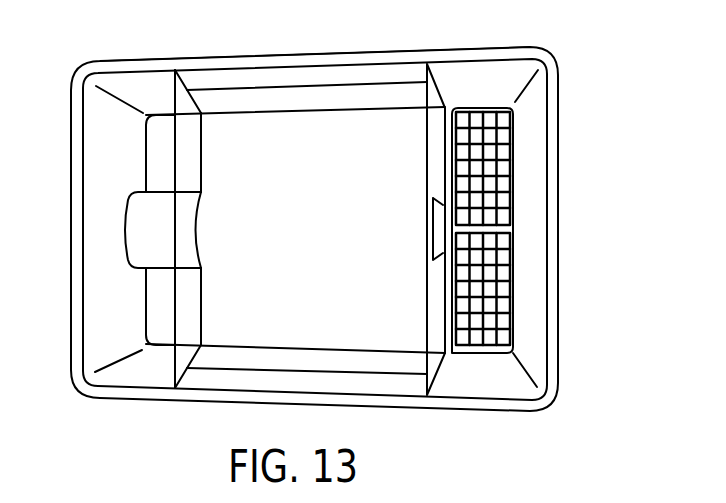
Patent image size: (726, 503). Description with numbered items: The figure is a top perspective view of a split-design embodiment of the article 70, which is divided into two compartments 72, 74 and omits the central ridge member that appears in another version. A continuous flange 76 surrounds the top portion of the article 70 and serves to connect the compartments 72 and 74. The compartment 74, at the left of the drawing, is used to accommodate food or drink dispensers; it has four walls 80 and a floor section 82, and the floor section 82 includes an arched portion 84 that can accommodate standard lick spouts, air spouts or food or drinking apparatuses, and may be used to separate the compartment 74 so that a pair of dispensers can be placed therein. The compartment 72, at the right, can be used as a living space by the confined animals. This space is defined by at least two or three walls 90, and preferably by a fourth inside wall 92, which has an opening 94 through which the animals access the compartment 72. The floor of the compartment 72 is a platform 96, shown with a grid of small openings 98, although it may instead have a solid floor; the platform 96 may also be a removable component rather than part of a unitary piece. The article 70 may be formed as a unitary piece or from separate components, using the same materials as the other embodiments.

The article 70 is at (554, 36).
The compartment 72 is at (497, 385).
The compartment 74 is at (138, 85).
The continuous flange 76 is at (393, 55).
The walls 80 is at (155, 88).
The floor section 82 is at (163, 300).
The arched portion 84 is at (165, 225).
The walls 90 is at (472, 72).
The fourth inside wall 92 is at (437, 160).
The opening 94 is at (433, 252).
The platform 96 is at (500, 232).
The grid of small openings 98 is at (500, 140).